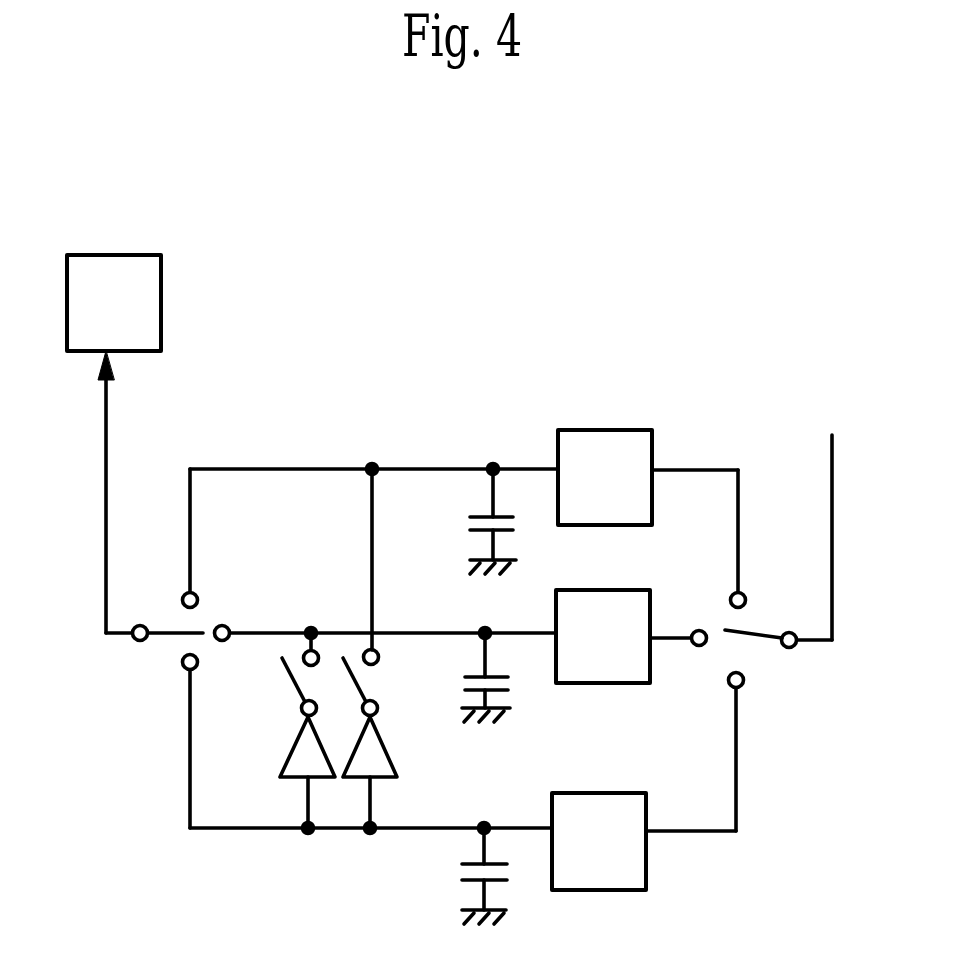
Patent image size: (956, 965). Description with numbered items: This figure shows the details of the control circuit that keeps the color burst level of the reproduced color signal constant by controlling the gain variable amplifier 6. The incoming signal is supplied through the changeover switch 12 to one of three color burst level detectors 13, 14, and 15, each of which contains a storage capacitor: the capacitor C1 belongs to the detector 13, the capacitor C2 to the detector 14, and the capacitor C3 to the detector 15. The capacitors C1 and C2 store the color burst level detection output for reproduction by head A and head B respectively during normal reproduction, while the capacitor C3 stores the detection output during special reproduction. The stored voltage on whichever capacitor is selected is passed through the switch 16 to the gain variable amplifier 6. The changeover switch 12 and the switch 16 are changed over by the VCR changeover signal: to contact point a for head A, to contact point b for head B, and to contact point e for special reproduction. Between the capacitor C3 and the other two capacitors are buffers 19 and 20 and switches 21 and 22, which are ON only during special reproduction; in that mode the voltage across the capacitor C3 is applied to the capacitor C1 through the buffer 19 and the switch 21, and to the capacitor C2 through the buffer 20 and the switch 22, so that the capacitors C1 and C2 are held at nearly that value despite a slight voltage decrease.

The gain variable amplifier 6 is at (161, 282).
The changeover switch 12 is at (750, 618).
The color burst level detector 13 is at (613, 443).
The color burst level detector 14 is at (632, 668).
The color burst level detector 15 is at (636, 840).
The switch 16 is at (168, 643).
The buffer 19 is at (370, 763).
The buffer 20 is at (300, 753).
The switch 21 is at (362, 672).
The switch 22 is at (288, 675).
The capacitor C1 is at (460, 521).
The capacitor C2 is at (457, 680).
The capacitor C3 is at (456, 883).